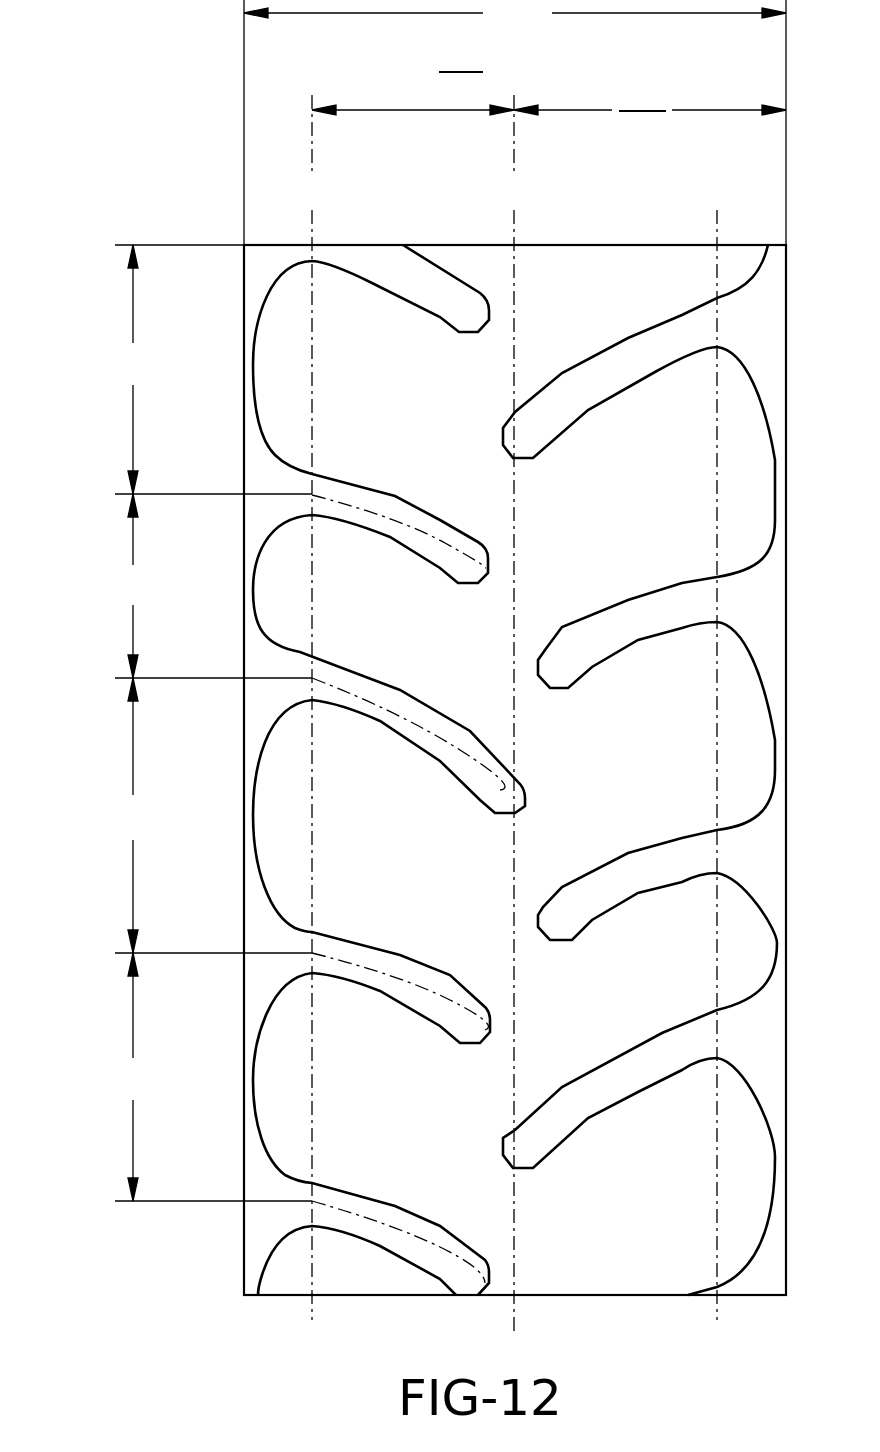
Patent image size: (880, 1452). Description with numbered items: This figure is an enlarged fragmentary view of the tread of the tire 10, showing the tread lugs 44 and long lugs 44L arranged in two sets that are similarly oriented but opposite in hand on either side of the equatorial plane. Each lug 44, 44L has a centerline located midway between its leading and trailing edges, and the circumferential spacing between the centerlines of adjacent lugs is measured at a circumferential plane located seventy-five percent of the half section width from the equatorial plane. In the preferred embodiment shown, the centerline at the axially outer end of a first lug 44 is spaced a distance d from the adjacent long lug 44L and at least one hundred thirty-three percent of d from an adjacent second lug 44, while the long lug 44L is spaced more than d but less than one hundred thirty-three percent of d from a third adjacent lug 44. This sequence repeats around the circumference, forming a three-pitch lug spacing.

The tire 10 is at (226, 1260).
The lug 44 is at (553, 655).
The long lug 44L is at (497, 778).